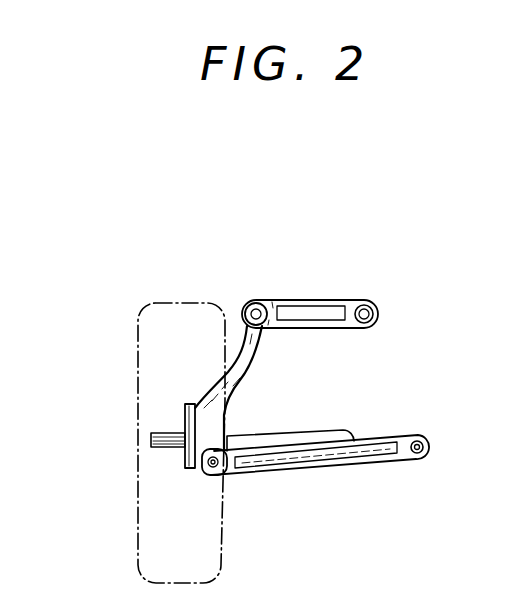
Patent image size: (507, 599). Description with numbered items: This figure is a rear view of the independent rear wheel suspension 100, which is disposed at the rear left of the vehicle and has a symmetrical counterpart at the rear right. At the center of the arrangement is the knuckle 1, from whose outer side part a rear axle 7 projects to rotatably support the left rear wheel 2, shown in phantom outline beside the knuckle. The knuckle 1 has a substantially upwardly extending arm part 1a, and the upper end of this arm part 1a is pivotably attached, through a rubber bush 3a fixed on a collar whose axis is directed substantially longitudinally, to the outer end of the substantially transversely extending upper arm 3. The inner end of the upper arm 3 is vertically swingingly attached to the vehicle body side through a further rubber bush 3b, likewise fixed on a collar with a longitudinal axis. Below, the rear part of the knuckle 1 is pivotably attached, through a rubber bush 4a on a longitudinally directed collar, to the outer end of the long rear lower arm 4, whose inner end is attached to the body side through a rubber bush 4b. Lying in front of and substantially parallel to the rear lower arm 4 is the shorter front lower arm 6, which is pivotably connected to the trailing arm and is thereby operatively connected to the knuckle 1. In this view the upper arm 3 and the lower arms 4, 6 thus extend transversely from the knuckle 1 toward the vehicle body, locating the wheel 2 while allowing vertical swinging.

The left rear wheel 2 is at (134, 332).
The rear axle 7 is at (157, 435).
The knuckle 1 is at (186, 463).
The arm part 1a is at (247, 357).
The upper arm 3 is at (320, 285).
The rubber bush 3a is at (253, 300).
The rubber bush 3b is at (373, 304).
The front lower arm 6 is at (306, 432).
The rear lower arm 4 is at (374, 468).
The rubber bush 4a is at (222, 477).
The rubber bush 4b is at (430, 450).
The independent rear wheel suspension 100 is at (288, 372).